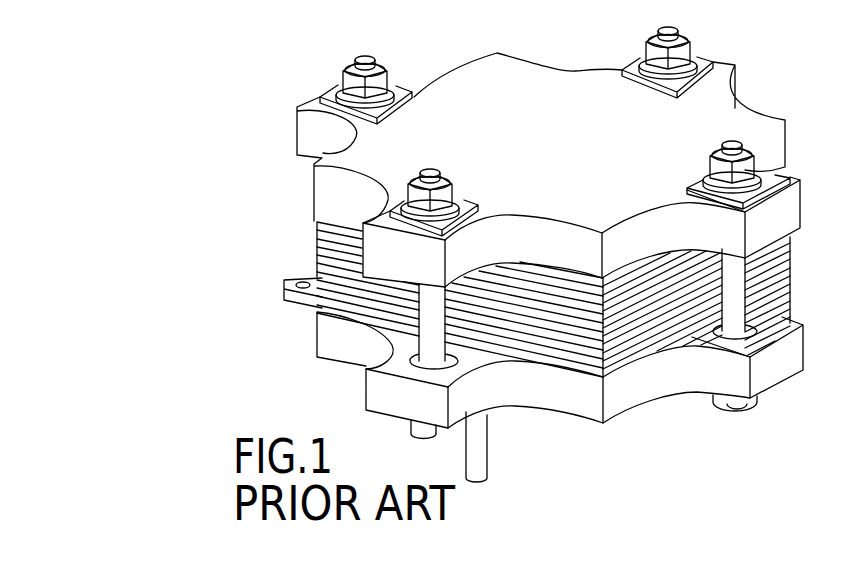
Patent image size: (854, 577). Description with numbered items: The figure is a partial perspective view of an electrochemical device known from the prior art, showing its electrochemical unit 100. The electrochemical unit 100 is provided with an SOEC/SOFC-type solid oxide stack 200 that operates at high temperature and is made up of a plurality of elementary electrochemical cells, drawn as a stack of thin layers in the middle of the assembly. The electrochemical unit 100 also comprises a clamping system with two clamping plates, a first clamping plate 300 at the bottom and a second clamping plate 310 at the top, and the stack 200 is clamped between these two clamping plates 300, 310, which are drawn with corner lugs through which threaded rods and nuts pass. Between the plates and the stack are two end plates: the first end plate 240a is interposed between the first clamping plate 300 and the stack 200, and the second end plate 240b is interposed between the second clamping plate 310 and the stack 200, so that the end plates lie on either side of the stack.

The electrochemical unit 100 is at (162, 124).
The second clamping plate 310 is at (297, 122).
The second end plate 240b is at (313, 224).
The SOEC/SOFC-type solid oxide stack 200 is at (284, 281).
The first end plate 240a is at (284, 297).
The first clamping plate 300 is at (319, 336).